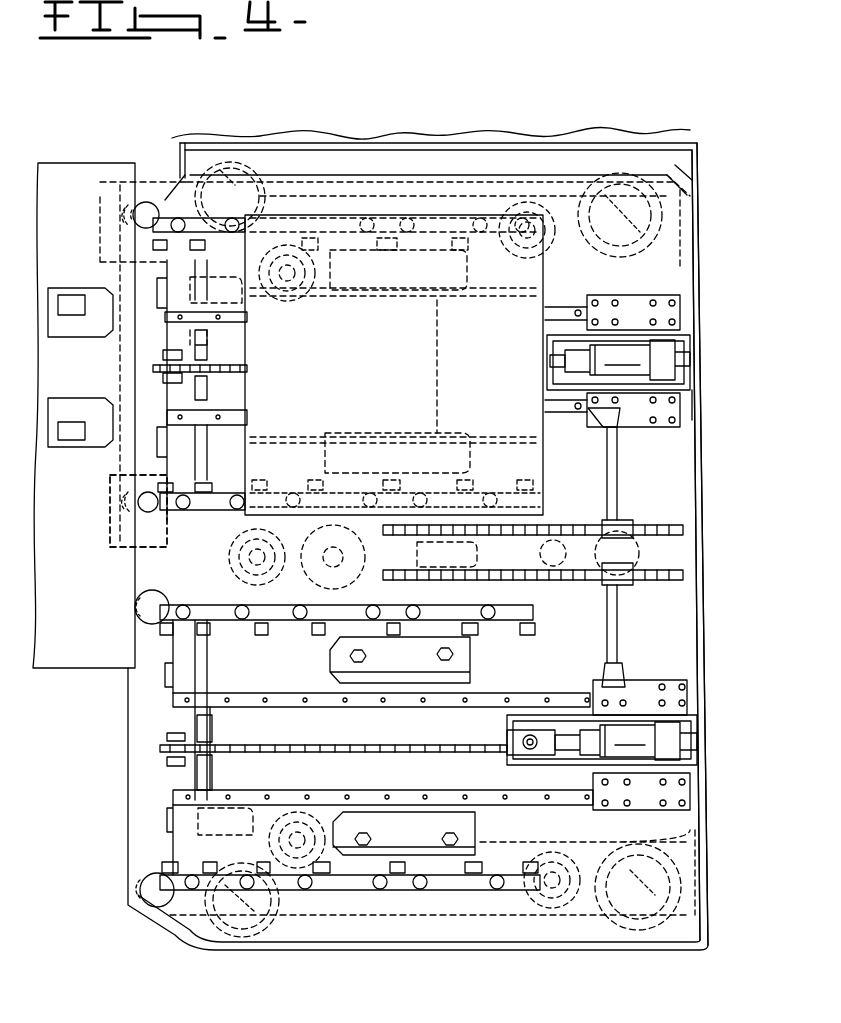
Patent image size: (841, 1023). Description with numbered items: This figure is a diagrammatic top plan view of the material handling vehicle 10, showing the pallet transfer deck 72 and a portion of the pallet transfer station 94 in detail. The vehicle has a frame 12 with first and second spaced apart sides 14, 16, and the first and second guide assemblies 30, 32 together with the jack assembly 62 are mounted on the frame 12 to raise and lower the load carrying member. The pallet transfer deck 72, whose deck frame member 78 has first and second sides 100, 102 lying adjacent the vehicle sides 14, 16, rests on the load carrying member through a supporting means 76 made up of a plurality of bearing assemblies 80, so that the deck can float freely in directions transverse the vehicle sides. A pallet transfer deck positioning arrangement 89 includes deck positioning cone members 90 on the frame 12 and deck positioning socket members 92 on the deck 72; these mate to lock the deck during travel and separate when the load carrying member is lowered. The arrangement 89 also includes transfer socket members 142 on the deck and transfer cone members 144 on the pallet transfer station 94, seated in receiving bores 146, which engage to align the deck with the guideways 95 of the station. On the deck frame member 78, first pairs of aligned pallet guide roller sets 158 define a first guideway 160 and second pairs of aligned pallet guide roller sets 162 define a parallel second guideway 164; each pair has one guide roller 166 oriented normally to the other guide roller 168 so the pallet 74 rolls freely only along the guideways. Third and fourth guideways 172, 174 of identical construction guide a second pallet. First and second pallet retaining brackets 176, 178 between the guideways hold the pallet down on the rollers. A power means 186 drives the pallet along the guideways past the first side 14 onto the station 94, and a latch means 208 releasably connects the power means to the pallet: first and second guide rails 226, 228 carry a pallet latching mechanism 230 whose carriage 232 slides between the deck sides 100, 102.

The material handling vehicle 10 is at (393, 105).
The frame 12 is at (498, 133).
The first side 14 is at (180, 158).
The second side 16 is at (697, 170).
The first guide assembly 30 is at (290, 628).
The second guide assembly 32 is at (555, 592).
The jack assembly 62 is at (470, 595).
The pallet transfer deck 72 is at (600, 173).
The pallet 74 is at (430, 175).
The supporting means 76 is at (290, 300).
The deck frame member 78 is at (700, 497).
The bearing assembly 80 is at (300, 292).
The pallet transfer deck positioning arrangement 89 is at (245, 183).
The deck positioning cone member 90 is at (226, 178).
The deck positioning socket member 92 is at (260, 190).
The pallet transfer station 94 is at (93, 550).
The guideways 95 is at (62, 320).
The first side 100 is at (173, 842).
The second side 102 is at (703, 600).
The transfer socket member 142 is at (125, 228).
The transfer cone member 144 is at (135, 210).
The transfer socket member receiving bore 146 is at (137, 605).
The first pairs of aligned pallet guide roller sets 158 is at (302, 485).
The first guideway 160 is at (158, 485).
The second pairs of aligned pallet guide roller sets 162 is at (508, 165).
The second guideway 164 is at (150, 245).
The guide roller 166 is at (310, 222).
The guide roller 168 is at (320, 245).
The third guideway 172 is at (158, 867).
The fourth guideway 174 is at (158, 628).
The first pallet retaining bracket 176 is at (470, 448).
The second pallet retaining bracket 178 is at (468, 270).
The power means 186 is at (190, 358).
The latch means 208 is at (690, 362).
The first guide rail 226 is at (238, 418).
The second guide rail 228 is at (245, 325).
The pallet latching mechanism 230 is at (552, 355).
The carriage 232 is at (680, 322).